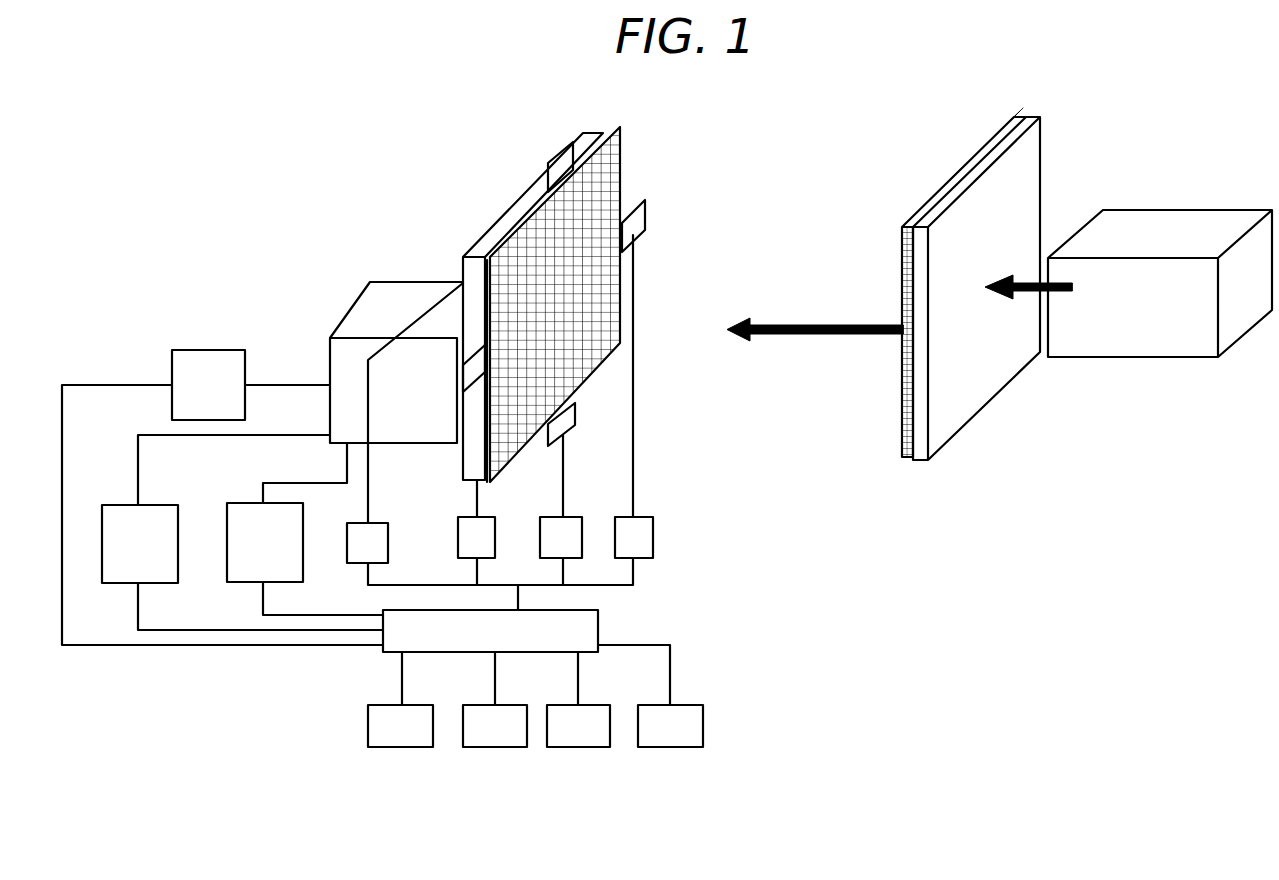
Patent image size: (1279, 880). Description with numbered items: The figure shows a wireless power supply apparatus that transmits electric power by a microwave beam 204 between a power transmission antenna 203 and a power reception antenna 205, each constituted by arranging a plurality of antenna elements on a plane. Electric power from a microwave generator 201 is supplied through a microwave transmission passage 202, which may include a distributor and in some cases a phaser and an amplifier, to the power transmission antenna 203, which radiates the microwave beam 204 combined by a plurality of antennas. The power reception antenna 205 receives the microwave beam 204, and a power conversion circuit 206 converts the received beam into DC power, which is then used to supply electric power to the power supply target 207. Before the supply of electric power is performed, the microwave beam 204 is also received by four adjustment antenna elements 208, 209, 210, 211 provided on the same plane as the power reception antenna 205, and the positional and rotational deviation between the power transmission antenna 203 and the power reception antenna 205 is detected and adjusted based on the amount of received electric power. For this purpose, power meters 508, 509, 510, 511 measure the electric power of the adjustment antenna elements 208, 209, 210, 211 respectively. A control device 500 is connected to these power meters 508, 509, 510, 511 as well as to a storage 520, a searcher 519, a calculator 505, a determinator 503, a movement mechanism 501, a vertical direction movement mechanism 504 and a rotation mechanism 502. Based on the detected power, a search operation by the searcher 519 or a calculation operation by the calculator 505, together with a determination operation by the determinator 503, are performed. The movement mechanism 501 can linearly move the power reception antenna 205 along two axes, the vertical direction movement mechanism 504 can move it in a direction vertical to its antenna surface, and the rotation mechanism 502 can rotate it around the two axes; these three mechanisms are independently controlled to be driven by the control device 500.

The microwave generator 201 is at (1170, 233).
The microwave transmission passage 202 is at (1037, 353).
The power transmission antenna 203 is at (900, 427).
The microwave beam 204 is at (830, 334).
The power reception antenna 205 is at (590, 227).
The power conversion circuit 206 is at (477, 292).
The power supply target 207 is at (358, 322).
The adjustment antenna element 208 is at (548, 165).
The adjustment antenna element 209 is at (633, 223).
The adjustment antenna element 210 is at (567, 422).
The adjustment antenna element 211 is at (465, 382).
The control device 500 is at (599, 619).
The movement mechanism 501 is at (119, 505).
The rotation mechanism 502 is at (233, 503).
The determinator 503 is at (400, 747).
The vertical direction movement mechanism 504 is at (185, 350).
The calculator 505 is at (494, 747).
The power meter 508 is at (388, 541).
The power meter 509 is at (653, 539).
The power meter 510 is at (578, 517).
The power meter 511 is at (495, 540).
The searcher 519 is at (578, 747).
The storage 520 is at (670, 747).